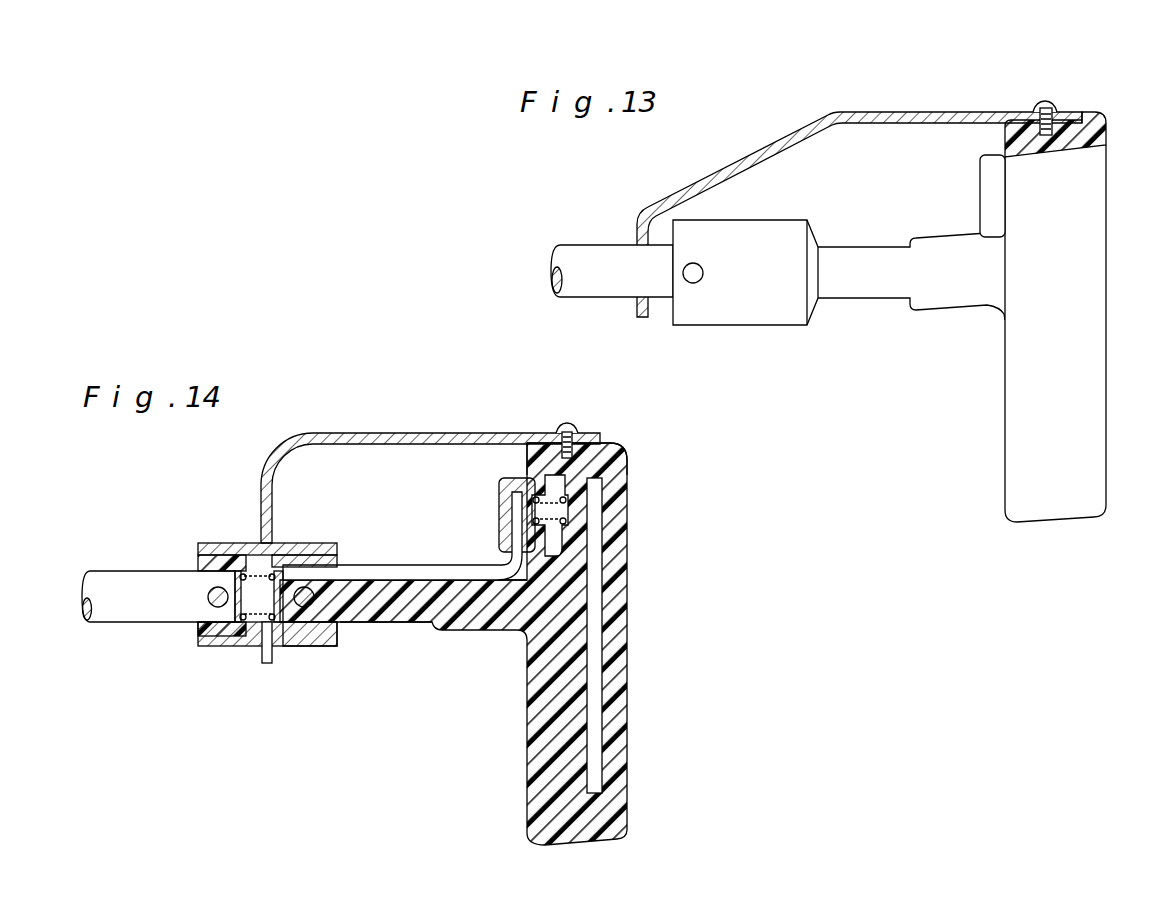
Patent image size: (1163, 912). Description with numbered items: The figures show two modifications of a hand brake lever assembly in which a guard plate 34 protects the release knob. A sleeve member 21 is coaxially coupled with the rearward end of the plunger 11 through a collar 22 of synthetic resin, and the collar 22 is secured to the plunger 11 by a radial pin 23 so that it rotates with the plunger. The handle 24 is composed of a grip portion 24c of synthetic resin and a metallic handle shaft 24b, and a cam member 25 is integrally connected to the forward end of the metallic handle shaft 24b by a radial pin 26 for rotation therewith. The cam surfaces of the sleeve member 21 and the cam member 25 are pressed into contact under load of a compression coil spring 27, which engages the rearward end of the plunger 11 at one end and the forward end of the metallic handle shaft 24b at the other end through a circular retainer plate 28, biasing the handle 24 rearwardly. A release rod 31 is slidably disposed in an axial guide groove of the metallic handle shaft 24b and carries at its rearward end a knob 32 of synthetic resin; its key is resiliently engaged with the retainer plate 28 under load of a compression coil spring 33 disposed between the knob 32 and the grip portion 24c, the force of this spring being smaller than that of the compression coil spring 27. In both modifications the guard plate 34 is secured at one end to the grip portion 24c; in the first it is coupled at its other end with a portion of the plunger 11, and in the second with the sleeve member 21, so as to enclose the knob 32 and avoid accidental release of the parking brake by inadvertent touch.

In FIG. 13, the plunger 11 is at (593, 291).
In FIG. 14, the plunger 11 is at (84, 592).
In FIG. 13, the sleeve member 21 is at (728, 318).
In FIG. 14, the sleeve member 21 is at (228, 646).
In FIG. 14, the collar 22 is at (200, 633).
In FIG. 14, the radial pin 23 is at (208, 597).
In FIG. 13, the handle 24 is at (1102, 331).
In FIG. 14, the handle 24 is at (623, 647).
In FIG. 13, the metallic handle shaft 24b is at (875, 292).
In FIG. 14, the metallic handle shaft 24b is at (423, 617).
In FIG. 13, the grip portion 24c is at (1106, 122).
In FIG. 14, the grip portion 24c is at (613, 442).
In FIG. 14, the cam member 25 is at (300, 635).
In FIG. 14, the radial pin 26 is at (313, 601).
In FIG. 14, the compression coil spring 27 is at (268, 621).
In FIG. 14, the circular retainer plate 28 is at (282, 598).
In FIG. 14, the release rod 31 is at (368, 575).
In FIG. 13, the knob 32 is at (988, 201).
In FIG. 14, the knob 32 is at (500, 521).
In FIG. 14, the compression coil spring 33 is at (565, 498).
In FIG. 13, the guard plate 34 is at (741, 165).
In FIG. 14, the guard plate 34 is at (269, 462).